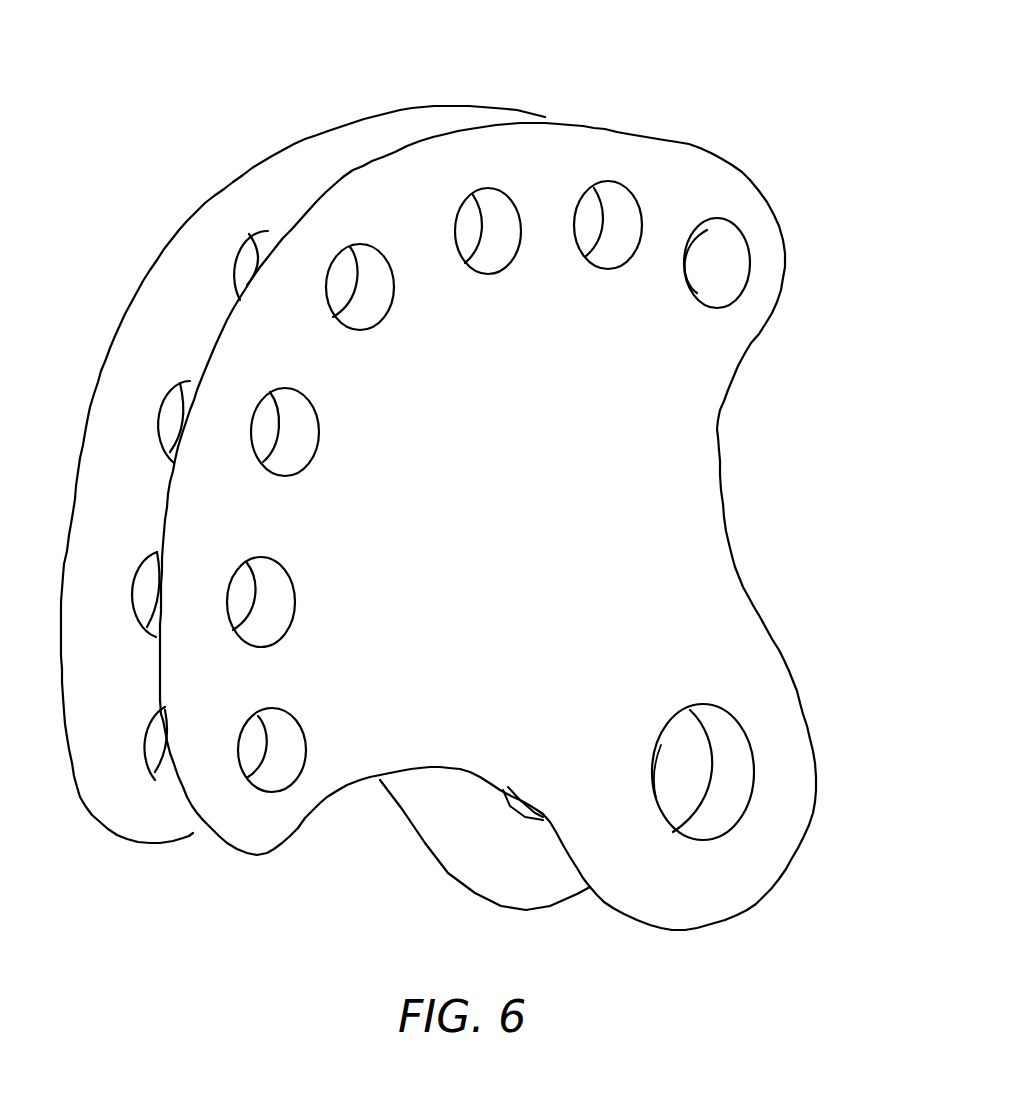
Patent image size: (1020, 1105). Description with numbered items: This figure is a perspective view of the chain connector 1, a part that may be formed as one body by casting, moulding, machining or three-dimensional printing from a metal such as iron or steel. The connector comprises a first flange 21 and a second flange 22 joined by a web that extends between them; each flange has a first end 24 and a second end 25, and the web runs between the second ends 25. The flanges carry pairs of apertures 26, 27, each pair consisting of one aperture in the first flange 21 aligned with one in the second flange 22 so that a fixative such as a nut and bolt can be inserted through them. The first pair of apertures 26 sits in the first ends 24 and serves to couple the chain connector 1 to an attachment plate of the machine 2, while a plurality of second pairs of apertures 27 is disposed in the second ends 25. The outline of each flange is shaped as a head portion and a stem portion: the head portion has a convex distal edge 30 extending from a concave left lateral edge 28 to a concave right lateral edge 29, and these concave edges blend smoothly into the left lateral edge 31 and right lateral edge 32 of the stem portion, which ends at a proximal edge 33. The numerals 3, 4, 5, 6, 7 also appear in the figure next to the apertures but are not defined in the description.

The chain connector 1 is at (465, 491).
The first flange 21 is at (462, 858).
The second flange 22 is at (187, 499).
The first end 24 is at (753, 800).
The second end 25 is at (313, 508).
The first pair of apertures 26 is at (762, 772).
The second pairs of apertures 27 is at (429, 539).
The left lateral edge of head portion 28 is at (286, 832).
The right lateral edge of head portion 29 is at (760, 348).
The distal edge 30 is at (465, 138).
The left lateral edge of stem portion 31 is at (637, 929).
The right lateral edge of stem portion 32 is at (787, 640).
The proximal edge 33 is at (770, 846).
The machine 2 is at (288, 750).
The screw hole 3 is at (608, 242).
The screw hole 4 is at (278, 602).
The screw hole 5 is at (490, 246).
The screw hole 6 is at (299, 432).
The screw hole 7 is at (368, 293).